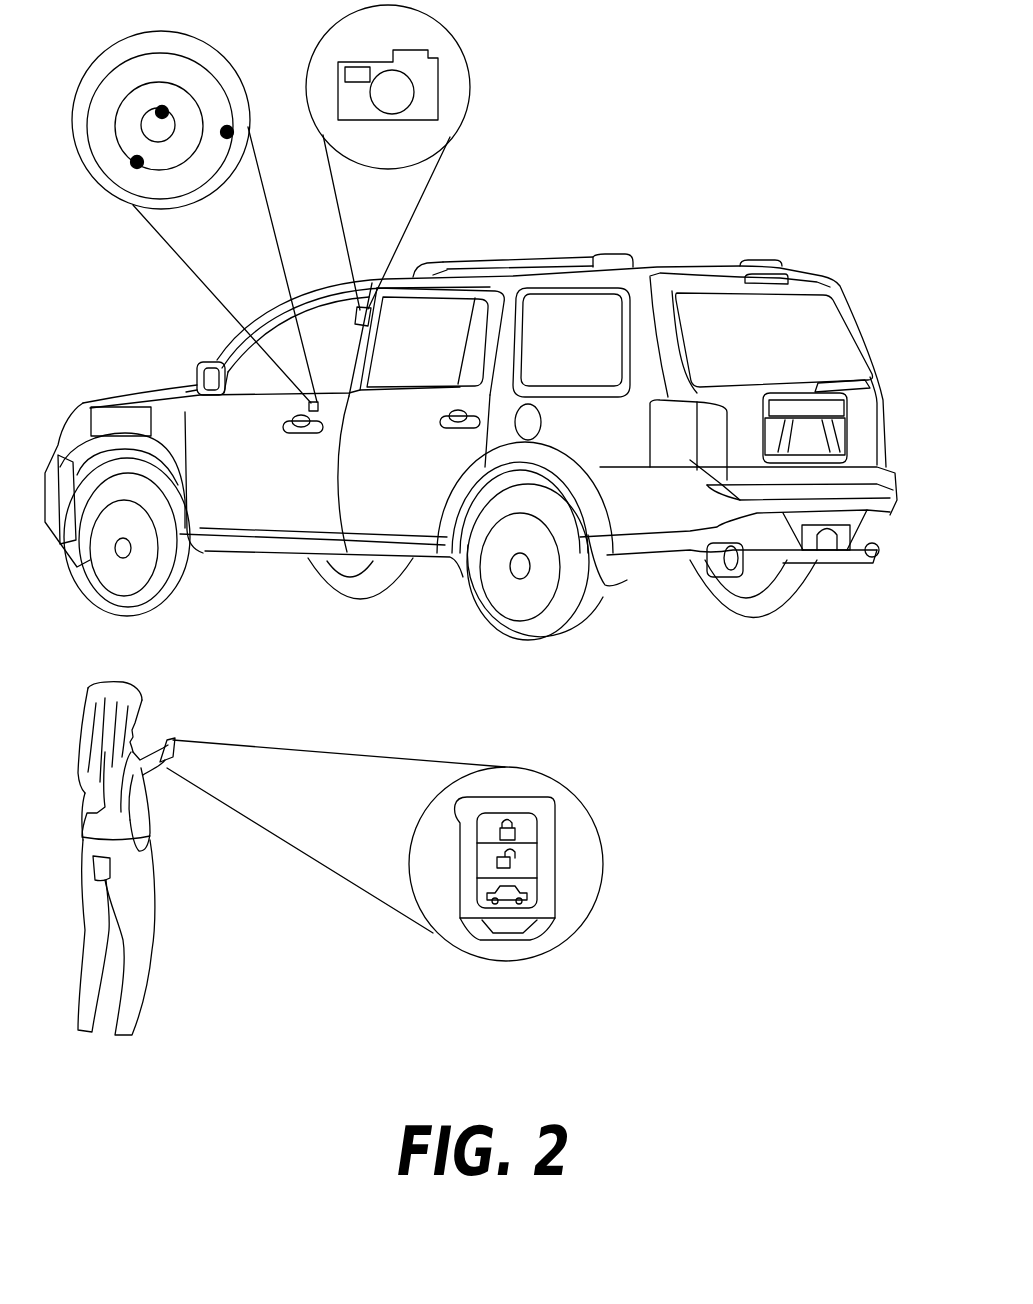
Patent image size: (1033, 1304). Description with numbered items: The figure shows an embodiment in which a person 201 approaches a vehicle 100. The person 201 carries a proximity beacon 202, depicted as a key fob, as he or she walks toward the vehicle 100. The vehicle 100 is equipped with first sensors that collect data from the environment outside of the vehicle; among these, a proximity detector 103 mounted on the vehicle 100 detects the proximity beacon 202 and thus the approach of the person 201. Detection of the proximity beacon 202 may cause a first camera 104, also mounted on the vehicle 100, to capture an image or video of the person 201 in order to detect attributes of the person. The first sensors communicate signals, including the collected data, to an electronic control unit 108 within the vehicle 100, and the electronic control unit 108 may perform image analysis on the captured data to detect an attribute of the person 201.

The vehicle 100 is at (85, 403).
The proximity detector 103 is at (103, 77).
The first camera 104 is at (363, 60).
The electronic control unit 108 is at (130, 404).
The person 201 is at (83, 728).
The proximity beacon 202 is at (558, 863).